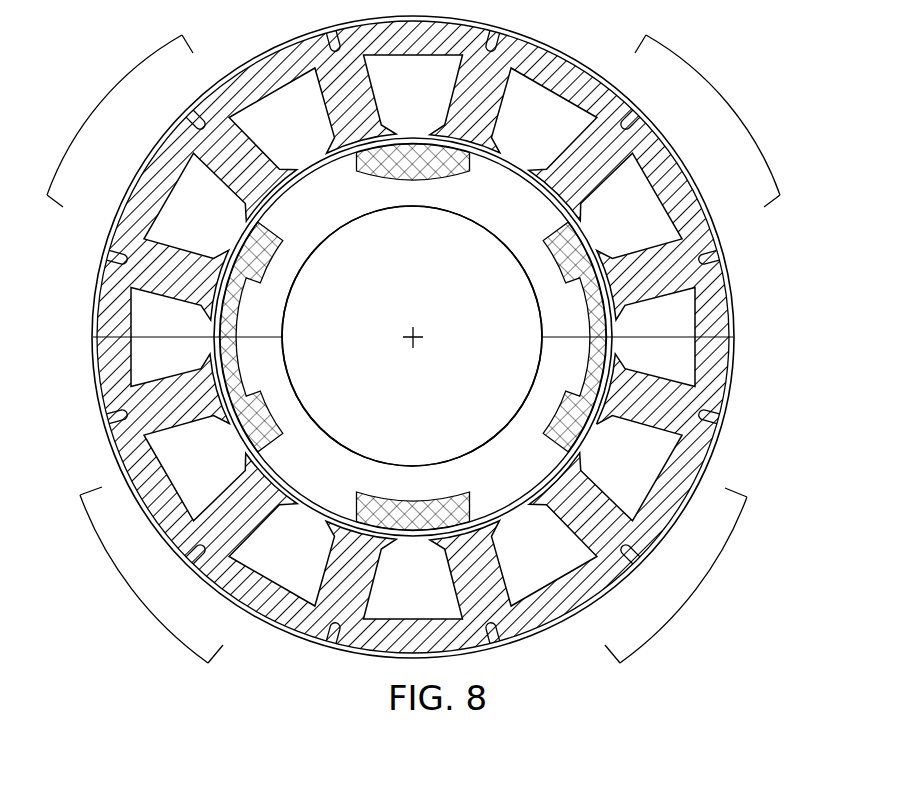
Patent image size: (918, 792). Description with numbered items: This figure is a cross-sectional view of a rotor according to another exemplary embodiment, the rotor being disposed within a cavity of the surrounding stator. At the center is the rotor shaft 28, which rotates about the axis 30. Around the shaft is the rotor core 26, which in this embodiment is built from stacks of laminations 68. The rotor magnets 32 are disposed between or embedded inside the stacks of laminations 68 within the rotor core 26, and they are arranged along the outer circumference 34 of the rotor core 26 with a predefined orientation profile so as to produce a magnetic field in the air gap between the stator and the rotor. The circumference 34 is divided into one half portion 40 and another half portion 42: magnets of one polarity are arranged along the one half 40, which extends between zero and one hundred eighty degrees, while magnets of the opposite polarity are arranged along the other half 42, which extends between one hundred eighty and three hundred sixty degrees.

The rotor core 26 is at (457, 206).
The rotor shaft 28 is at (299, 271).
The axis 30 is at (418, 329).
The rotor magnets 32 is at (562, 404).
The outer circumference 34 is at (513, 505).
The one half portion 40 is at (102, 103).
The other half portion 42 is at (132, 592).
The stacks of laminations 68 is at (350, 507).